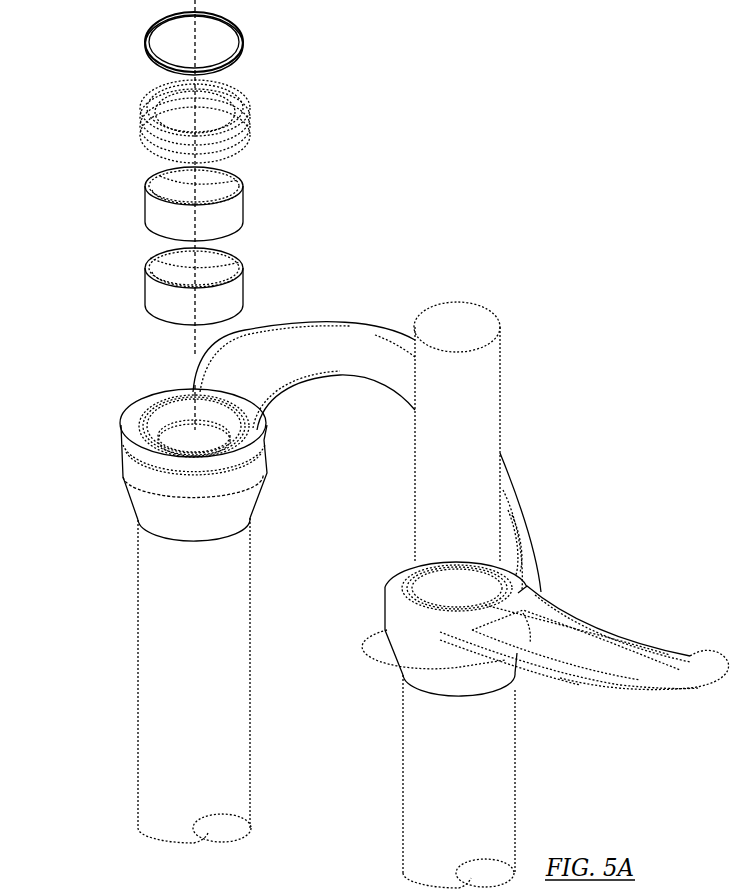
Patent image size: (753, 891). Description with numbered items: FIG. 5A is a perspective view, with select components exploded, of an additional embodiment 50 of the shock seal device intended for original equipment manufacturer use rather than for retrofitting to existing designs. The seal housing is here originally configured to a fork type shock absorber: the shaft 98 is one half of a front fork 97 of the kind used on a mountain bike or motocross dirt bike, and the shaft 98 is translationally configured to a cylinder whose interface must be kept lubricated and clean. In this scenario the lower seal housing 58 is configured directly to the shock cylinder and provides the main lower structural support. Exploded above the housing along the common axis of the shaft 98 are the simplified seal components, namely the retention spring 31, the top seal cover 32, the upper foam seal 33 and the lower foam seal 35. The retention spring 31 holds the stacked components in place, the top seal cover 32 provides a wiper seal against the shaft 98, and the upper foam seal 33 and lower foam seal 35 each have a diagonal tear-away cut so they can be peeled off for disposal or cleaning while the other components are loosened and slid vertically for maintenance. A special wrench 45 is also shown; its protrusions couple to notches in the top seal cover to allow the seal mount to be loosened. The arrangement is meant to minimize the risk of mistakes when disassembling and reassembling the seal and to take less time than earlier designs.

The retention spring 31 is at (243, 54).
The top seal cover 32 is at (140, 118).
The upper foam seal 33 is at (243, 220).
The lower foam seal 35 is at (143, 297).
The additional embodiment 50 is at (375, 518).
The lower seal housing 58 is at (136, 472).
The front fork 97 is at (343, 350).
The shaft 98 is at (495, 394).
The special wrench 45 is at (690, 655).